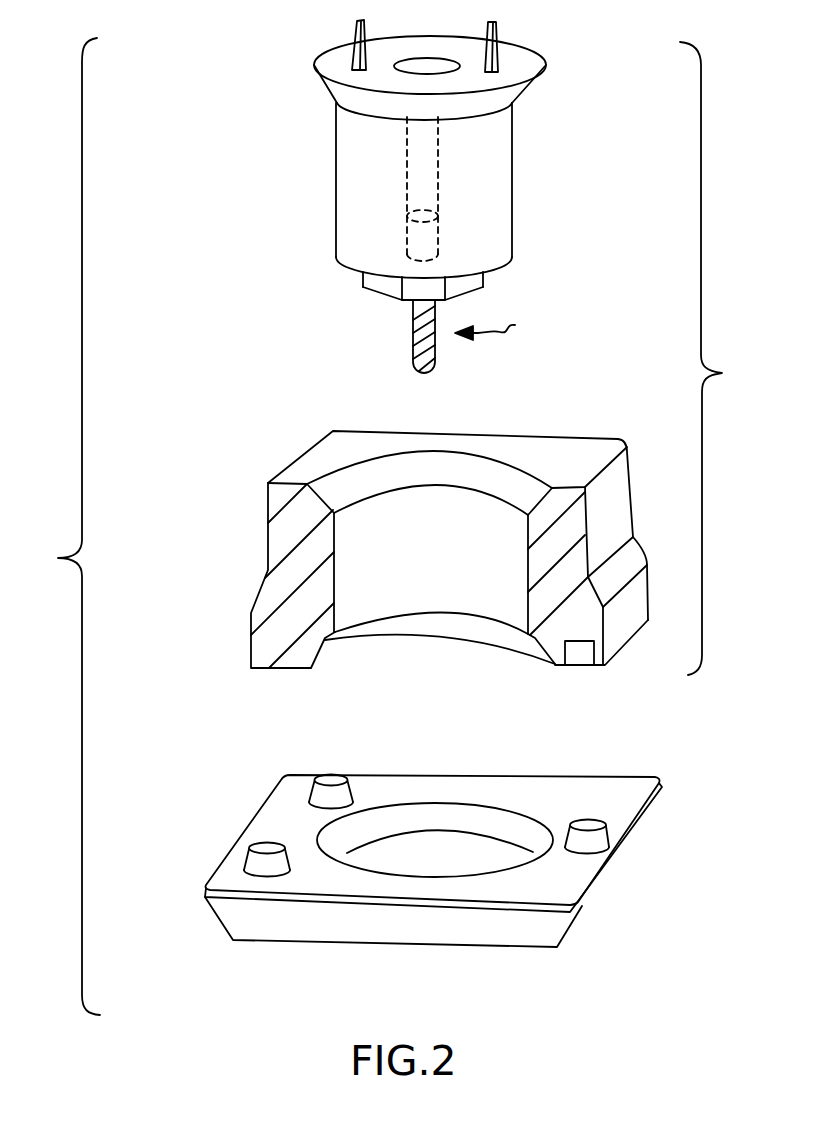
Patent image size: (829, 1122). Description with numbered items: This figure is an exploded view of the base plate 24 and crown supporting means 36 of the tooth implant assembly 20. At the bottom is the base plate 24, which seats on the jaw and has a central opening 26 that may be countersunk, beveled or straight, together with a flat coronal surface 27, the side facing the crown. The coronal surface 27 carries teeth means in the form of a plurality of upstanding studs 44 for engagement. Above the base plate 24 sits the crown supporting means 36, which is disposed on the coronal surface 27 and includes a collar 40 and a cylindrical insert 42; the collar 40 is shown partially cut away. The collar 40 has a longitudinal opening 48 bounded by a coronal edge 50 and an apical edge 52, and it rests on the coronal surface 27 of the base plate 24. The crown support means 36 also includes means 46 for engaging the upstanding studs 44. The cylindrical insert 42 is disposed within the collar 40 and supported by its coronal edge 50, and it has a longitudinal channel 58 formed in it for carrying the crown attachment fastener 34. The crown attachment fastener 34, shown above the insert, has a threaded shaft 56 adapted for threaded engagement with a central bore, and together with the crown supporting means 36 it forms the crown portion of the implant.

The tooth implant assembly 20 is at (63, 526).
The base plate 24 is at (585, 906).
The central opening 26 is at (525, 828).
The coronal surface 27 is at (268, 817).
The crown attachment fastener 34 is at (500, 326).
The crown supporting means 36 is at (722, 373).
The collar 40 is at (268, 543).
The cylindrical insert 42 is at (512, 160).
The upstanding studs 44 is at (334, 778).
The engaging means 46 is at (589, 653).
The longitudinal opening 48 is at (482, 600).
The coronal edge 50 is at (477, 471).
The apical edge 52 is at (320, 651).
The threaded shaft 56 is at (415, 345).
The longitudinal channel 58 is at (440, 63).